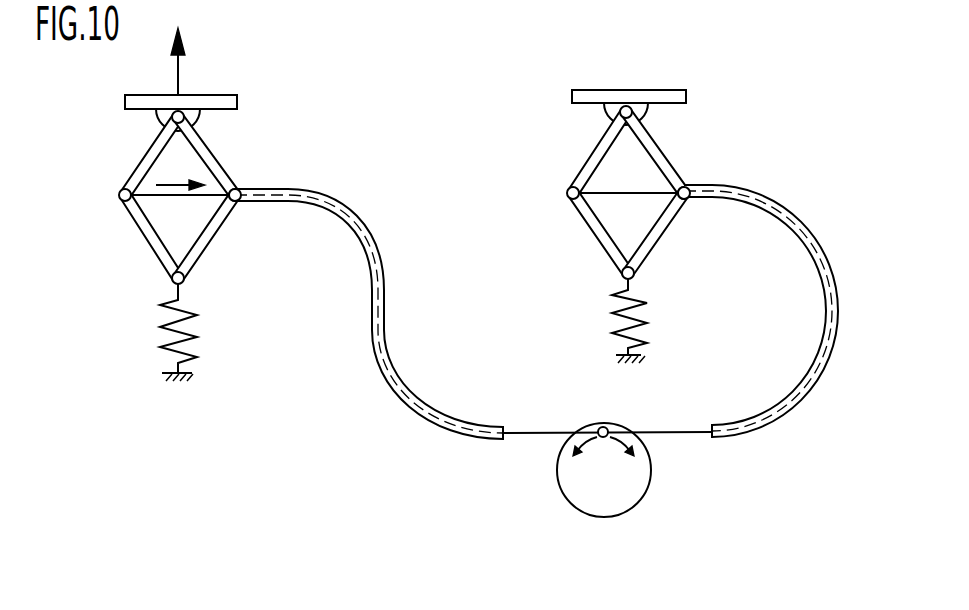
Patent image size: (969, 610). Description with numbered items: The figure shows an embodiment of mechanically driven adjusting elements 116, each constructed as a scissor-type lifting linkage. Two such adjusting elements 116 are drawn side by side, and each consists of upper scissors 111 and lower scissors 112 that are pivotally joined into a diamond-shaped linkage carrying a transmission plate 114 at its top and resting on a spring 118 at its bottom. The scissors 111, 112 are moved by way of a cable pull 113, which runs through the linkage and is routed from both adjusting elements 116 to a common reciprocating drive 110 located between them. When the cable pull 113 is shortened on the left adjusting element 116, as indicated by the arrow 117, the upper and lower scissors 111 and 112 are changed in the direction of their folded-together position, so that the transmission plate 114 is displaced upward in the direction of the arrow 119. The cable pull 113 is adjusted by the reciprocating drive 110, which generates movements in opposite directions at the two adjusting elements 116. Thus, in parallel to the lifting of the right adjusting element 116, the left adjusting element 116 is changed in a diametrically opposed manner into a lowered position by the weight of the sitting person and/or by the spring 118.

The reciprocating drive 110 is at (550, 502).
The upper scissors 111 is at (147, 147).
The lower scissors 112 is at (158, 255).
The cable pull 113 is at (143, 210).
The transmission plate 114 is at (218, 100).
The adjusting element 116 is at (108, 167).
The arrow 117 is at (170, 183).
The spring 118 is at (196, 336).
The arrow 119 is at (180, 47).